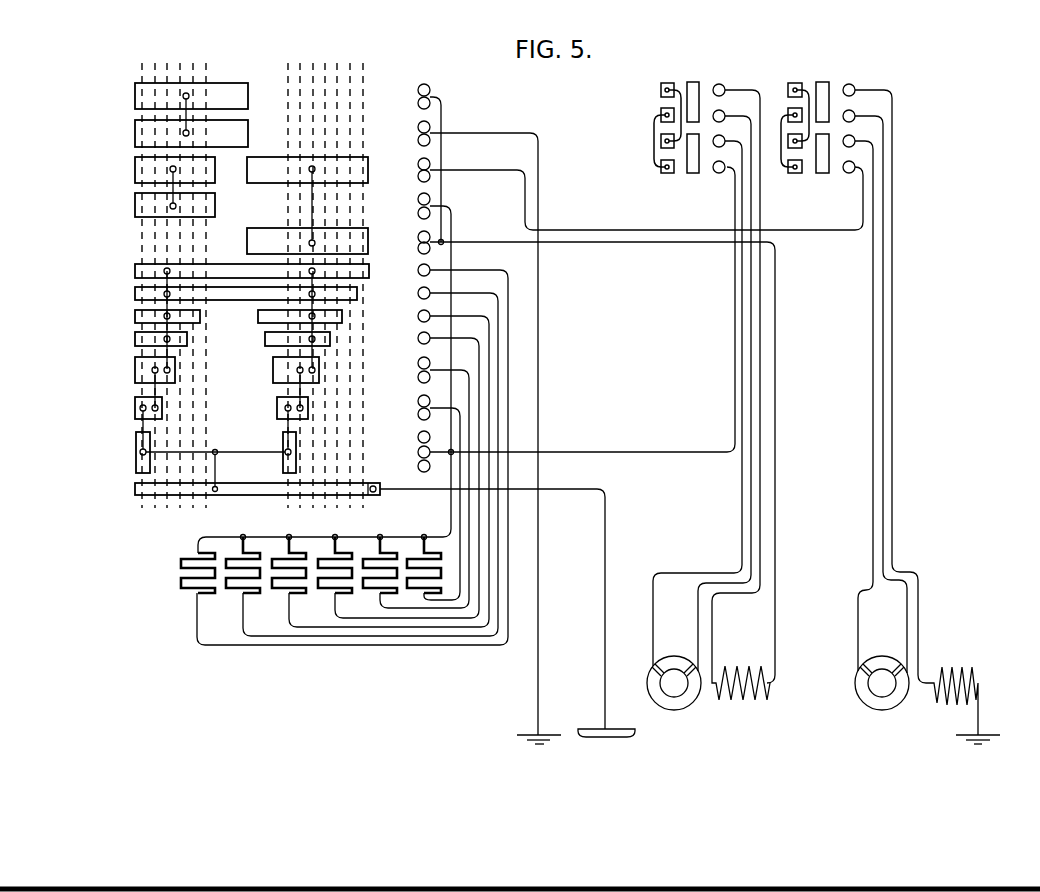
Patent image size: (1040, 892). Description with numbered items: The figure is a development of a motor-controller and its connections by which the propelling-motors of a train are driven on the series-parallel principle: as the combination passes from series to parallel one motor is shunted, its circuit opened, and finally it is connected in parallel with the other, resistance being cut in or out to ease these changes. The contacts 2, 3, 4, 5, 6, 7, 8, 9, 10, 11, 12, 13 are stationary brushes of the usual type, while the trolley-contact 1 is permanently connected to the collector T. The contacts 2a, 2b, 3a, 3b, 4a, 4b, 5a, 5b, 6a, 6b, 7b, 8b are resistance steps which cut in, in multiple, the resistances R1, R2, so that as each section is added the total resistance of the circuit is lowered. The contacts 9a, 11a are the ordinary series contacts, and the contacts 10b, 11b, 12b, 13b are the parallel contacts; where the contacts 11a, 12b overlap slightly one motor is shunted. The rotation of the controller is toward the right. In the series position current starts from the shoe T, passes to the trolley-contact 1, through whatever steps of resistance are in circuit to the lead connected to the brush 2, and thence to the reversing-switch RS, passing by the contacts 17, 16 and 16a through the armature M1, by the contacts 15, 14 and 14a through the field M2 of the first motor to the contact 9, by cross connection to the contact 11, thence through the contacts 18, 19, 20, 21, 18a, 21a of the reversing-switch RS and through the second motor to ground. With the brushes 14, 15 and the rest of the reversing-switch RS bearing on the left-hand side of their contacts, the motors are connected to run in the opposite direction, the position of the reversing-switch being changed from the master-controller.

The trolley-contact 1 is at (135, 490).
The stationary brush 2 is at (564, 319).
The stationary brush 3 is at (426, 497).
The stationary brush 4 is at (424, 482).
The stationary brush 5 is at (407, 473).
The stationary brush 6 is at (389, 467).
The stationary brush 7 is at (370, 460).
The stationary brush 8 is at (352, 453).
The stationary brush 9 is at (584, 457).
The stationary brush 10 is at (324, 373).
The stationary brush 11 is at (627, 194).
The stationary brush 12 is at (476, 432).
The stationary brush 13 is at (417, 164).
The resistance step contact 2a is at (271, 451).
The resistance step contact 3a is at (275, 423).
The resistance step contact 4a is at (279, 381).
The resistance step contact 5a is at (281, 343).
The resistance step contact 6a is at (285, 320).
The series contact 9a is at (293, 241).
The series contact 11a is at (247, 180).
The resistance step contact 2b is at (126, 452).
The resistance step contact 3b is at (132, 423).
The resistance step contact 4b is at (139, 381).
The resistance step contact 5b is at (145, 343).
The resistance step contact 6b is at (151, 320).
The resistance step contact 7b is at (230, 298).
The resistance step contact 8b is at (236, 315).
The parallel contact 10b is at (153, 205).
The parallel contact 11b is at (153, 180).
The parallel contact 12b is at (170, 134).
The parallel contact 13b is at (170, 106).
The reversing-switch brush 14 is at (741, 384).
The reversing-switch brush 15 is at (724, 383).
The reversing-switch brush 16 is at (701, 394).
The reversing-switch brush 17 is at (730, 158).
The reversing-switch brush 18 is at (921, 406).
The reversing-switch brush 19 is at (875, 384).
The reversing-switch brush 20 is at (861, 397).
The reversing-switch brush 21 is at (857, 159).
The reversing-switch contact 14a is at (693, 82).
The reversing-switch contact 16a is at (693, 173).
The reversing-switch contact 18a is at (822, 82).
The reversing-switch contact 21a is at (822, 173).
The reversing-switch RS is at (731, 110).
The resistance R1 is at (292, 564).
The resistance R2 is at (252, 591).
The armature M1 is at (681, 708).
The field M2 is at (755, 710).
The collector T is at (620, 738).